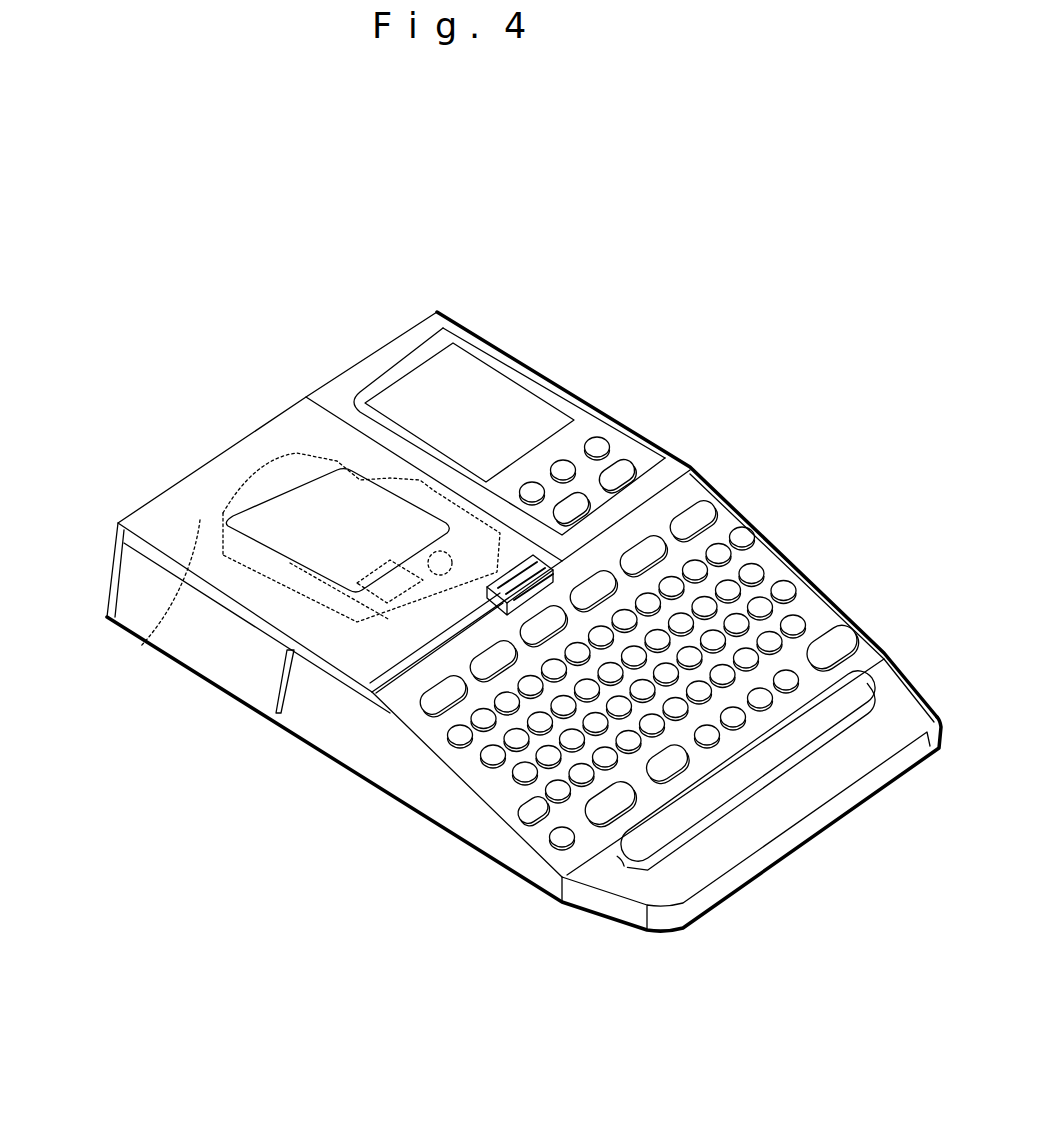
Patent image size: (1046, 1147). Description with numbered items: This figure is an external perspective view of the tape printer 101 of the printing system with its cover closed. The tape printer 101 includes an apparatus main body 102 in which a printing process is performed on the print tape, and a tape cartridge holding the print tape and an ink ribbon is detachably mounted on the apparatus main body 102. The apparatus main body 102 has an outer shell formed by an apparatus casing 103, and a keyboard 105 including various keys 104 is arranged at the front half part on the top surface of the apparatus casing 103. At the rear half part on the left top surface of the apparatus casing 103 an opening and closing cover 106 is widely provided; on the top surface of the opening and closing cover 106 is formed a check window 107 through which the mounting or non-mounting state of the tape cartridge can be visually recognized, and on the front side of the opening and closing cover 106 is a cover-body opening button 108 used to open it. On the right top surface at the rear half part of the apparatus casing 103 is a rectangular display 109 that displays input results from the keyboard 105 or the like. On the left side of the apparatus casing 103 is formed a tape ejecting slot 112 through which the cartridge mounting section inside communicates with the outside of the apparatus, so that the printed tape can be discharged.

The tape printer 101 is at (343, 312).
The apparatus main body 102 is at (516, 348).
The apparatus casing 103 is at (132, 590).
The keys 104 is at (752, 575).
The keyboard 105 is at (815, 607).
The opening and closing cover 106 is at (243, 458).
The check window 107 is at (340, 545).
The cover-body opening button 108 is at (493, 585).
The display 109 is at (513, 396).
The tape ejecting slot 112 is at (280, 690).